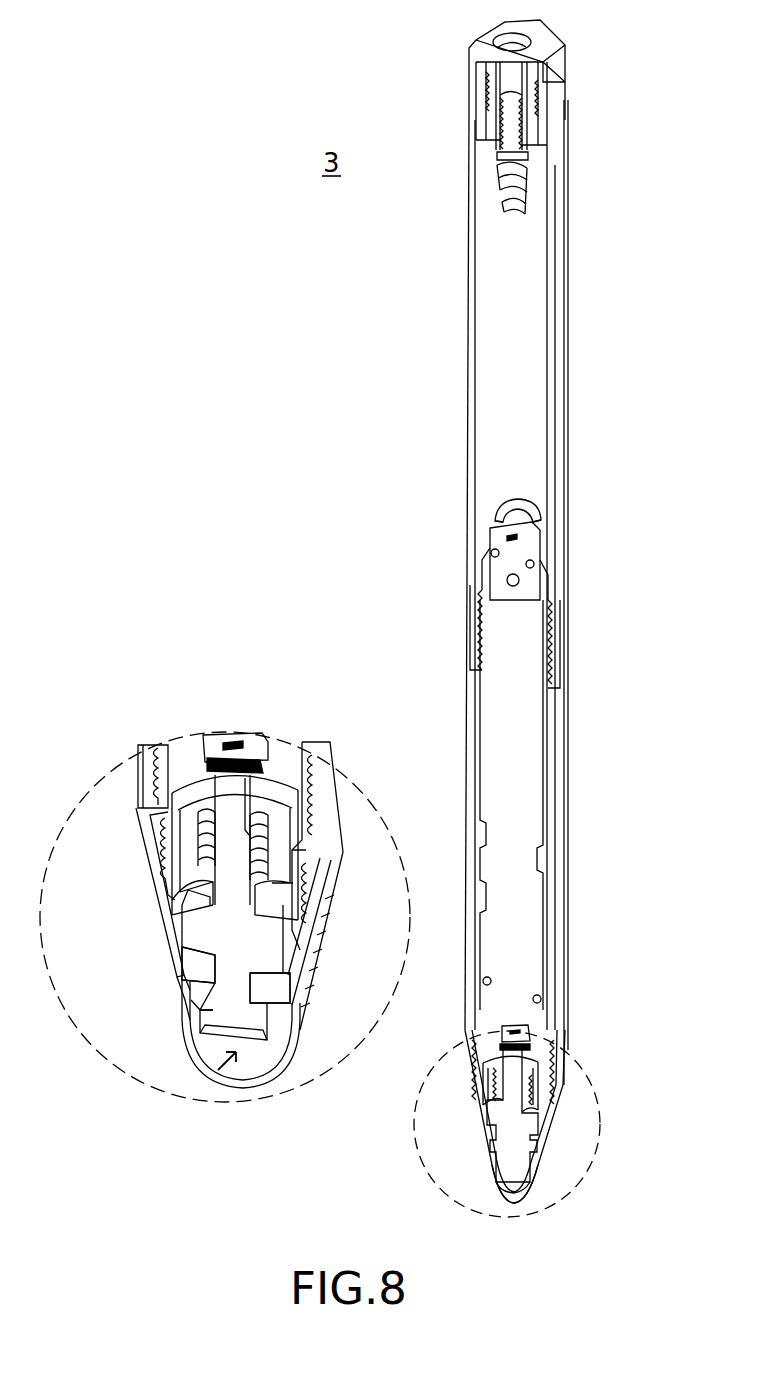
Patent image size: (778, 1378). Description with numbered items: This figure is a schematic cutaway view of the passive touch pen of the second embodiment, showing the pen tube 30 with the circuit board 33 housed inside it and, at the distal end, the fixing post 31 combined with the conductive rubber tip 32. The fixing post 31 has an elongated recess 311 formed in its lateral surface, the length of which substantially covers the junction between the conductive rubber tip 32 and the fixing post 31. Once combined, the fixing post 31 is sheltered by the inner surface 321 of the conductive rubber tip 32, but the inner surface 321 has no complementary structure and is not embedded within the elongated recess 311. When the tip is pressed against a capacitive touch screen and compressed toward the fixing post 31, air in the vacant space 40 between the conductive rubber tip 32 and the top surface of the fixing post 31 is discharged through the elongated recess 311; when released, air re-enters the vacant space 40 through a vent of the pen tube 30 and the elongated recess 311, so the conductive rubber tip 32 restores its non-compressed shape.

The pen tube 30 is at (580, 252).
The fixing post 31 is at (508, 1125).
The conductive rubber tip 32 is at (512, 1202).
The circuit board 33 is at (492, 762).
The vacant space 40 is at (226, 1052).
The elongated recess 311 is at (210, 975).
The inner surface 321 is at (263, 1047).